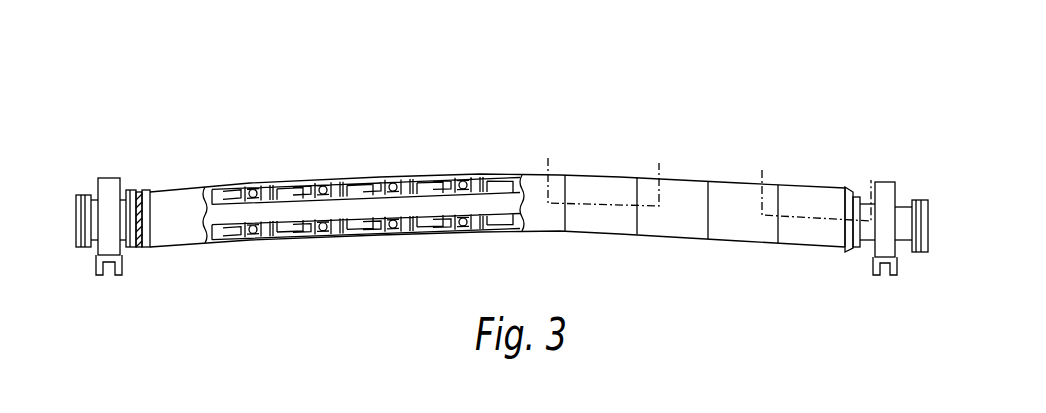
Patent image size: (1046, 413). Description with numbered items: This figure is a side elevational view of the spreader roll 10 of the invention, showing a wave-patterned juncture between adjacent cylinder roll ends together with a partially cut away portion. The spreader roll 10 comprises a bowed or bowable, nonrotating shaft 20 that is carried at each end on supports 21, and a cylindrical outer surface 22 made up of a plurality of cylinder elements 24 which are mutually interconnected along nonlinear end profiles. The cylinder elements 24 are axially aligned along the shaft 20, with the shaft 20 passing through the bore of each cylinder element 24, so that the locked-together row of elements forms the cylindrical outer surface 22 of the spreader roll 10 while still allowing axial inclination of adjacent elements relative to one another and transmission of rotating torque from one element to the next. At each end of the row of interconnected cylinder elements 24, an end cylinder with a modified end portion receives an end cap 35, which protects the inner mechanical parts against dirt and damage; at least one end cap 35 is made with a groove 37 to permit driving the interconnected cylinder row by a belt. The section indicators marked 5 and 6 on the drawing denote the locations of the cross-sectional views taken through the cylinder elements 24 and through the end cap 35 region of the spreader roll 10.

The spreader roll 10 is at (622, 112).
The shaft 20 is at (267, 214).
The supports 21 is at (105, 187).
The cylindrical outer surface 22 is at (722, 179).
The cylinder elements 24 is at (617, 232).
The end cap 35 is at (152, 247).
The groove 37 is at (137, 197).
The section line 5- 5 is at (548, 152).
The section line 6- 6 is at (762, 164).